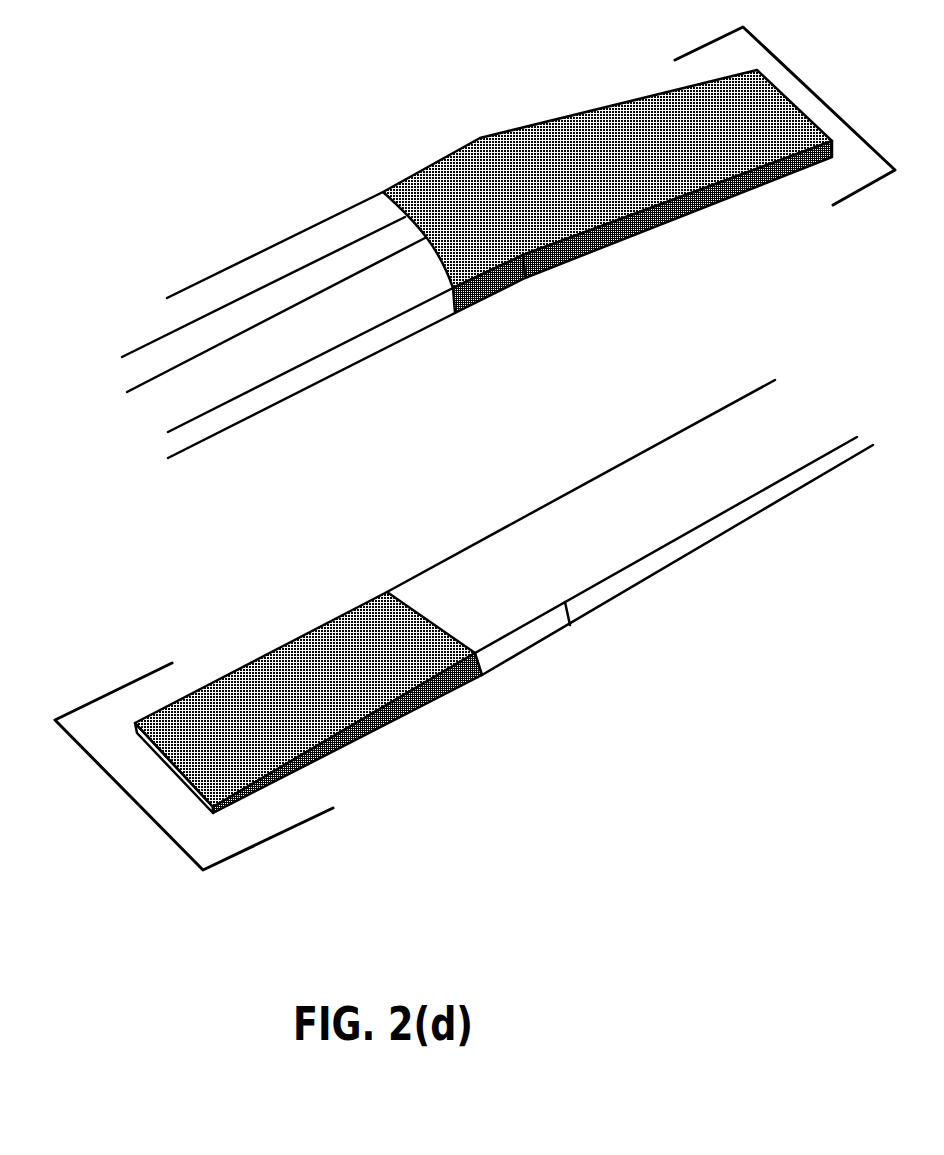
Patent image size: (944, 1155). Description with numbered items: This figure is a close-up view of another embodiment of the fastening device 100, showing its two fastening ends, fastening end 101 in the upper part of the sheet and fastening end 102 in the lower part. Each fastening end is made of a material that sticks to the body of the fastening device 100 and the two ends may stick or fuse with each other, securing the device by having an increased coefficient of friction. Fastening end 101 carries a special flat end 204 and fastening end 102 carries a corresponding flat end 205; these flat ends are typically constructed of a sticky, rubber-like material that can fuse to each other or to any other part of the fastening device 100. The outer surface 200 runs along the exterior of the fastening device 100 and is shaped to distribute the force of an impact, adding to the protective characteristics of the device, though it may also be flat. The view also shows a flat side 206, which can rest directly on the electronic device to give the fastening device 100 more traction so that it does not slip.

The fastening device 100 is at (217, 435).
The fastening end 101 is at (820, 100).
The fastening end 102 is at (128, 800).
The outer surface 200 is at (363, 295).
The flat end 204 is at (468, 167).
The flat end 205 is at (443, 692).
The flat side 206 is at (627, 478).